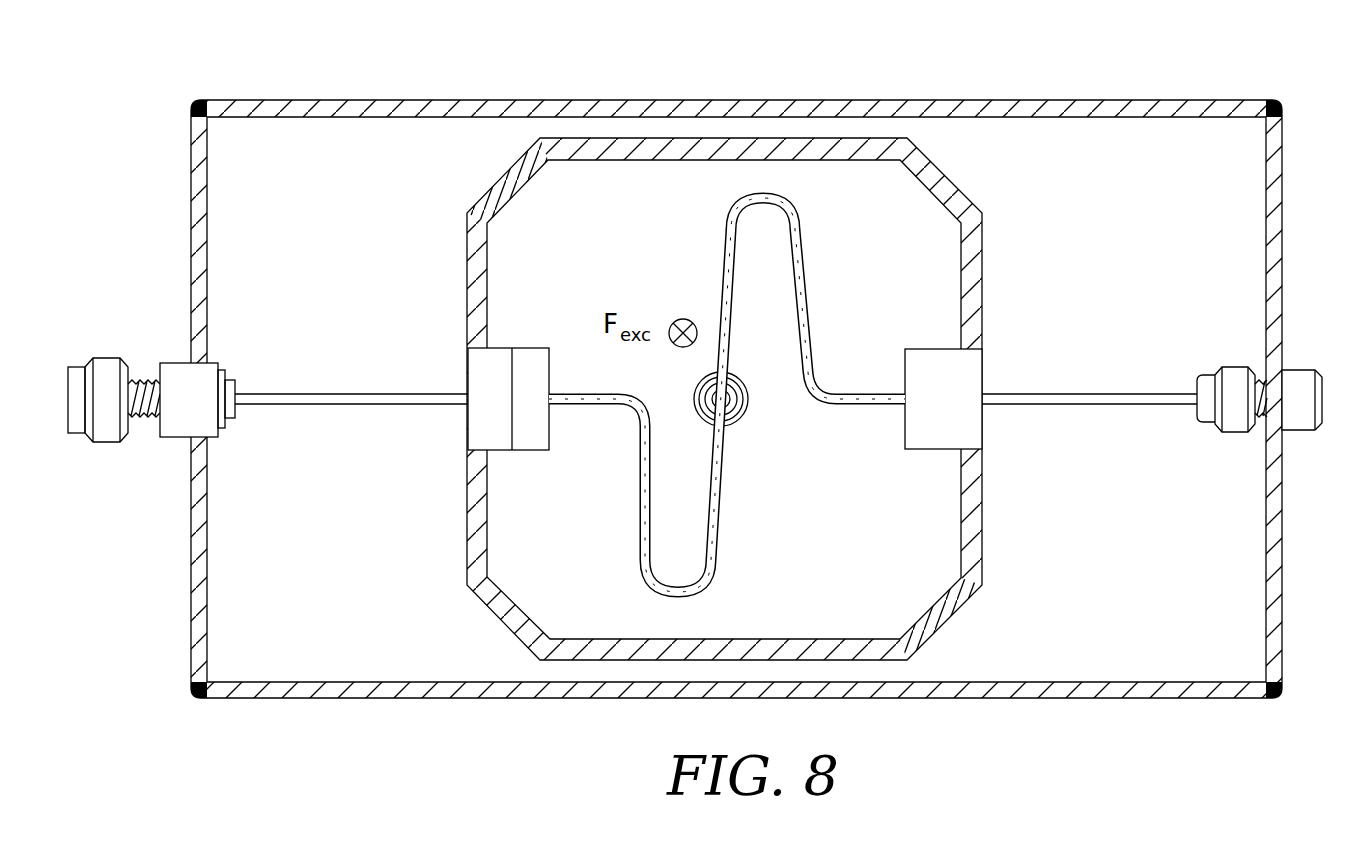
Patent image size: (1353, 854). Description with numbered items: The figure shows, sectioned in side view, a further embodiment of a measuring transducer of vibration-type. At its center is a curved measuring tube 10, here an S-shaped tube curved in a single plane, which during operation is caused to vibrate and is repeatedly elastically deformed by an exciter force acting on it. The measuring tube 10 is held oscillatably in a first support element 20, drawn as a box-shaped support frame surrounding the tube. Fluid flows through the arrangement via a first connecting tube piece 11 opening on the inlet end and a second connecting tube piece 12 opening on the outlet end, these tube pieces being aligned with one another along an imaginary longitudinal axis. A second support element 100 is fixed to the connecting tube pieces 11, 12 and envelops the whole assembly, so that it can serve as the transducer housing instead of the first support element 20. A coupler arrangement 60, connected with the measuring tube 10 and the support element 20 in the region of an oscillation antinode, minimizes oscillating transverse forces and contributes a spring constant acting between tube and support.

The measuring tube 10 is at (717, 503).
The first connecting tube piece 11 is at (315, 394).
The second connecting tube piece 12 is at (1085, 394).
The first support element 20 is at (522, 188).
The coupler arrangement 60 is at (752, 412).
The second support element 100 is at (300, 682).